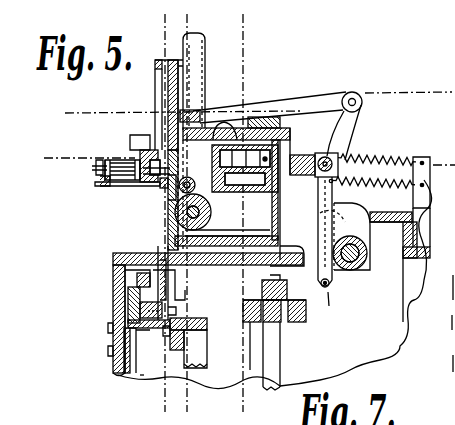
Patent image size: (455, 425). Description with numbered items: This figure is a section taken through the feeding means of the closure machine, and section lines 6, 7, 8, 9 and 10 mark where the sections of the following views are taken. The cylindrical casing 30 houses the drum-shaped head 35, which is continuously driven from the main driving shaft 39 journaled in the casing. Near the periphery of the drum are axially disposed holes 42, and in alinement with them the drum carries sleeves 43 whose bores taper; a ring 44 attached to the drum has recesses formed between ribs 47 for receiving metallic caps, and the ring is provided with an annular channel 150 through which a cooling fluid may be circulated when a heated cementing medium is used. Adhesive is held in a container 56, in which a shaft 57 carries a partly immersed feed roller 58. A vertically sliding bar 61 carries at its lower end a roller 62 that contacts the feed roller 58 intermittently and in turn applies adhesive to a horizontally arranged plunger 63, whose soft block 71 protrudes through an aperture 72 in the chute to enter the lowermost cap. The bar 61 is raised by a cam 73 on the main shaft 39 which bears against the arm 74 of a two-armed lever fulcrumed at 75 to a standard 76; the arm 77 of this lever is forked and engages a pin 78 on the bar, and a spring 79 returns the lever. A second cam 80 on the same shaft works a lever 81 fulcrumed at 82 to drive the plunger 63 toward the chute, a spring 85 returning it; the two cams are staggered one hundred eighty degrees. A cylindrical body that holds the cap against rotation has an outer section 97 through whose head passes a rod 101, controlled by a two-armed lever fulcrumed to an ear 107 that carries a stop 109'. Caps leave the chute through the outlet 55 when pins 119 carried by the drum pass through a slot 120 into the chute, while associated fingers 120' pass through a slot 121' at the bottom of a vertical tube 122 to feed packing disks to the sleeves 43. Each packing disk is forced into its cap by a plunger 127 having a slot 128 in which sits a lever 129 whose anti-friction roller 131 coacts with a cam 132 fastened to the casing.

The section line 6— 6 is at (162, 22).
The section line 7— 7 is at (68, 94).
The section line 8— 8 is at (182, 18).
The section line 9— 9 is at (47, 138).
The section line 10— 10 is at (241, 22).
The cylindrical casing 30 is at (114, 256).
The drum-shaped head 35 is at (201, 351).
The main driving shaft 39 is at (326, 289).
The axially disposed holes 42 is at (208, 330).
The sleeves 43 is at (177, 334).
The ring 44 is at (172, 262).
The ribs 47 is at (140, 330).
The outlet 55 is at (453, 290).
The container 56 is at (277, 224).
The shaft 57 is at (206, 216).
The feed roller 58 is at (198, 207).
The sliding bar 61 is at (165, 189).
The roller 62 is at (183, 196).
The plunger 63 is at (305, 153).
The soft block 71 is at (200, 138).
The aperture 72 is at (142, 192).
The cam 73 is at (368, 236).
The arm 74 is at (353, 124).
The fulcrum 75 is at (353, 91).
The standard 76 is at (392, 160).
The arm 77 is at (294, 104).
The pin 78 is at (168, 101).
The spring 79 is at (424, 156).
The second cam 80 is at (356, 270).
The lever 81 is at (319, 192).
The fulcrum 82 is at (323, 298).
The spring 85 is at (376, 194).
The section 97 is at (131, 146).
The rod 101 is at (122, 182).
The ear 107 is at (100, 183).
The stop 109' is at (71, 174).
The pin 119 is at (128, 291).
The slot 120 is at (98, 320).
The finger 120' is at (227, 243).
The slot 121' is at (196, 283).
The vertical tube 122 is at (204, 74).
The plunger 127 is at (262, 346).
The slot 128 is at (289, 322).
The lever 129 is at (281, 371).
The anti-friction rollers 131 is at (285, 293).
The cam 132 is at (302, 262).
The annular channel 150 is at (128, 311).